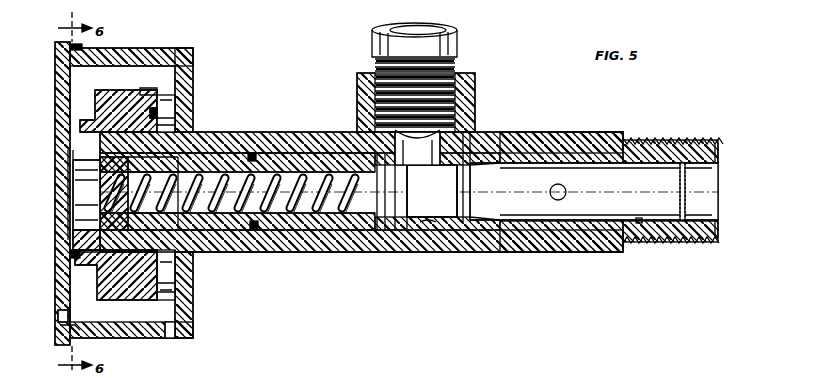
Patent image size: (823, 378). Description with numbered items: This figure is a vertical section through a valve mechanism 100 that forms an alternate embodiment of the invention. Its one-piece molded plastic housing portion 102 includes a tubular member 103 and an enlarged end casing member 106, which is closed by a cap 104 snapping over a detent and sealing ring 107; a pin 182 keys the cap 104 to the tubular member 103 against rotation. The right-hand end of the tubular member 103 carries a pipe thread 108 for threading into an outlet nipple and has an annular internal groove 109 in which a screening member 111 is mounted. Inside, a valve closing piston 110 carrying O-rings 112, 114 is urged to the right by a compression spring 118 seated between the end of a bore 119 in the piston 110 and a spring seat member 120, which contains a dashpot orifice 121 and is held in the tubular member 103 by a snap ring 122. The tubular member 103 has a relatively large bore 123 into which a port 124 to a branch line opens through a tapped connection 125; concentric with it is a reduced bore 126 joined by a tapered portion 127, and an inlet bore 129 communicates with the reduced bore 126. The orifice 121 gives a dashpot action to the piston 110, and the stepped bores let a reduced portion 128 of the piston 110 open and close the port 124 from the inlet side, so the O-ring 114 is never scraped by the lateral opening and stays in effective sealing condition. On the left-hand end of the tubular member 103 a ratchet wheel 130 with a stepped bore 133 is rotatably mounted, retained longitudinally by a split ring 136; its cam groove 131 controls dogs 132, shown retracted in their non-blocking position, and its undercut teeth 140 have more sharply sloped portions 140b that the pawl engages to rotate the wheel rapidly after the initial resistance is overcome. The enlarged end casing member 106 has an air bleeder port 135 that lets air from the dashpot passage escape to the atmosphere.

The valve mechanism 100 is at (521, 256).
The housing portion 102 is at (287, 257).
The tubular member 103 is at (568, 252).
The cap 104 is at (62, 72).
The enlarged end casing member 106 is at (193, 312).
The detent and sealing ring 107 is at (82, 47).
The pipe thread 108 is at (664, 138).
The annular internal groove 109 is at (687, 138).
The valve closing piston 110 is at (403, 253).
The screening member 111 is at (688, 205).
The O-ring 112 is at (353, 252).
The O-ring 114 is at (475, 103).
The compression spring 118 is at (313, 152).
The bore 119 is at (215, 240).
The spring seat member 120 is at (95, 188).
The dashpot orifice 121 is at (75, 220).
The snap ring 122 is at (75, 243).
The bore 123 is at (412, 247).
The port 124 is at (357, 103).
The tapped connection 125 is at (372, 57).
The reduced bore 126 is at (473, 163).
The tapered portion 127 is at (432, 191).
The reduced portion 128 is at (467, 202).
The bore 129 is at (640, 223).
The ratchet wheel 130 is at (147, 97).
The cam groove 131 is at (165, 123).
The dogs 132 is at (175, 280).
The stepped bore 133 is at (73, 158).
The air bleeder port 135 is at (178, 338).
The split ring 136 is at (72, 265).
The undercut teeth 140 is at (152, 300).
The sharply sloped portions 140b is at (152, 90).
The pin 182 is at (64, 312).